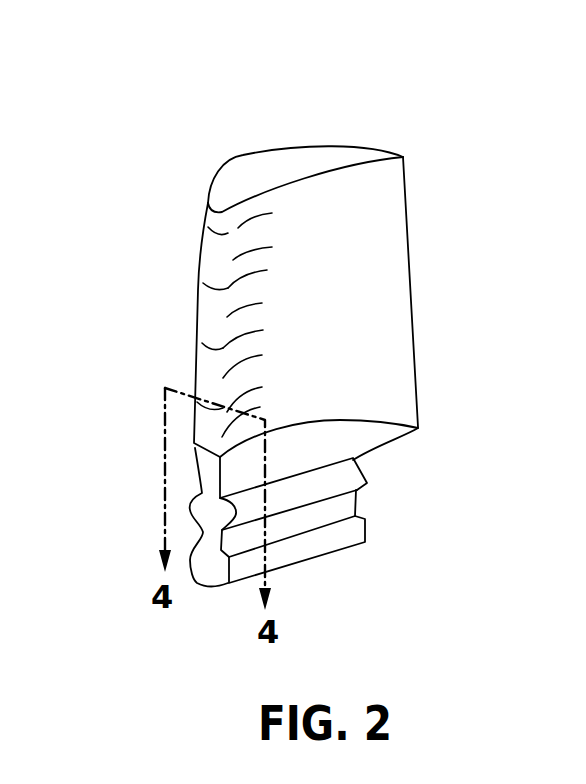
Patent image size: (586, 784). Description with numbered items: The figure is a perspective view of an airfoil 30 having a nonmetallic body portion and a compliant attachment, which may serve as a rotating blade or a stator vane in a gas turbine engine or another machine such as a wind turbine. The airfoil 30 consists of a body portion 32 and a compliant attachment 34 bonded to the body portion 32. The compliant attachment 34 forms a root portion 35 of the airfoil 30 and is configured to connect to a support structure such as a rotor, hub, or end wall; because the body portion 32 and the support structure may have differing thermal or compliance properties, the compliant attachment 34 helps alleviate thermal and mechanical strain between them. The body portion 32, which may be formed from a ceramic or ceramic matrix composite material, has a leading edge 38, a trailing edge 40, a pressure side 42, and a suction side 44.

The airfoil 30 is at (392, 117).
The body portion 32 is at (395, 293).
The compliant attachment 34 is at (347, 472).
The root portion 35 is at (337, 482).
The leading edge 38 is at (208, 300).
The trailing edge 40 is at (412, 337).
The pressure side 42 is at (338, 242).
The suction side 44 is at (242, 155).